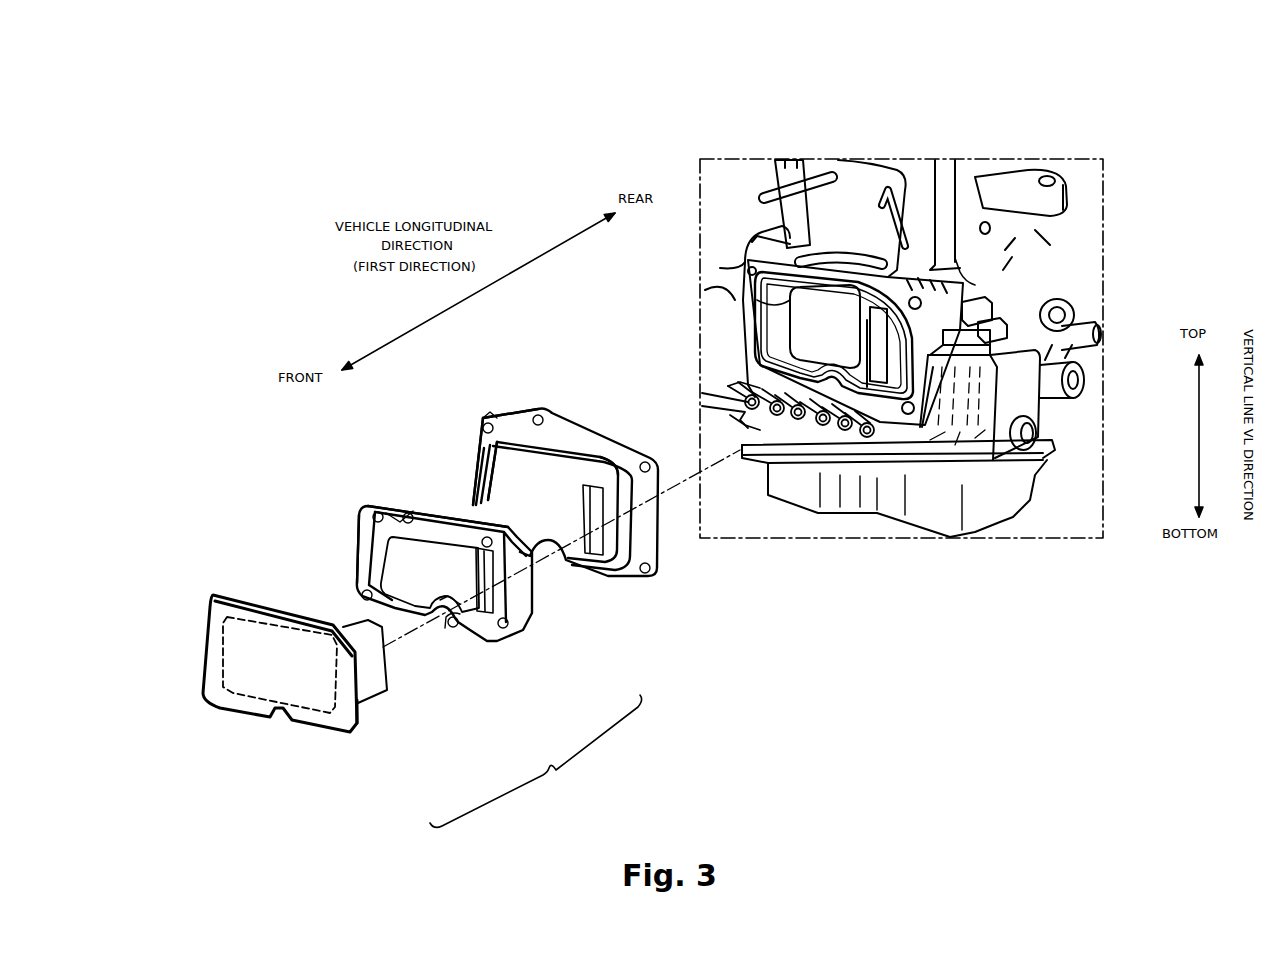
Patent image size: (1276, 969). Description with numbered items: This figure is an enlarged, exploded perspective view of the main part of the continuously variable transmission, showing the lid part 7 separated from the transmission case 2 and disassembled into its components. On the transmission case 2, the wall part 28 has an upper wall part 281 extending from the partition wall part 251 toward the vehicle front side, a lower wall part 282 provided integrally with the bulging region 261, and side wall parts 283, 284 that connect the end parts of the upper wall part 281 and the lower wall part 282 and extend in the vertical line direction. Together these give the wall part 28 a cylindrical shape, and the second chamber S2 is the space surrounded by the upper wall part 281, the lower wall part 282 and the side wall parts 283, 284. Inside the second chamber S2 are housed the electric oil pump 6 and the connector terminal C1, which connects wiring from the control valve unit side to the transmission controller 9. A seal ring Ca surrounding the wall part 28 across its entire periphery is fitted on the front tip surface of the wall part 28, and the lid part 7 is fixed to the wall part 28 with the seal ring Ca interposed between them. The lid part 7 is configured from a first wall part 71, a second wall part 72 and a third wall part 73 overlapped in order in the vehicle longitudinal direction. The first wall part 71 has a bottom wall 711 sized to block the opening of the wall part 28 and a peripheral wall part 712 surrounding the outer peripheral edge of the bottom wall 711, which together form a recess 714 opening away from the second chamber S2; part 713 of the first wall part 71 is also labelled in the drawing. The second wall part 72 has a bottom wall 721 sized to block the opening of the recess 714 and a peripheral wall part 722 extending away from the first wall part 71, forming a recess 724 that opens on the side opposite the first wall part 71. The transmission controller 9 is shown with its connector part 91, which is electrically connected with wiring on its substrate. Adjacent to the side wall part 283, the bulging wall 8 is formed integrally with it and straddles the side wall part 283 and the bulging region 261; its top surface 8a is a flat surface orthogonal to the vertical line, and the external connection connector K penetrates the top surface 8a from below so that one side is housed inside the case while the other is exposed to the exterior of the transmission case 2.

The transmission case 2 is at (1045, 145).
The partition wall part 251 is at (975, 300).
The wall part 28 is at (917, 272).
The upper wall part 281 is at (745, 287).
The lower wall part 282 is at (765, 360).
The side wall part 283 is at (958, 305).
The side wall part 284 is at (768, 330).
The external connection connector K is at (1002, 307).
The top surface 8a is at (1088, 332).
The bulging wall 8 is at (1023, 372).
The connector terminal C1 is at (893, 375).
The second chamber S2 is at (838, 340).
The electric oil pump 6 is at (790, 308).
The seal ring Ca is at (847, 425).
The bulging region 261 is at (903, 437).
The transmission controller 9 is at (262, 622).
The connector part 91 is at (372, 662).
The lid part 7 is at (536, 761).
The first wall part 71 is at (597, 588).
The bottom wall 711 is at (560, 470).
The peripheral wall part 712 is at (477, 452).
The first gasket upper portion 713 is at (517, 423).
The recess 714 is at (487, 492).
The second wall part 72 is at (476, 651).
The bottom wall 721 is at (393, 545).
The peripheral wall part 722 is at (410, 503).
The recess 724 is at (370, 580).
The third wall part 73 is at (377, 722).